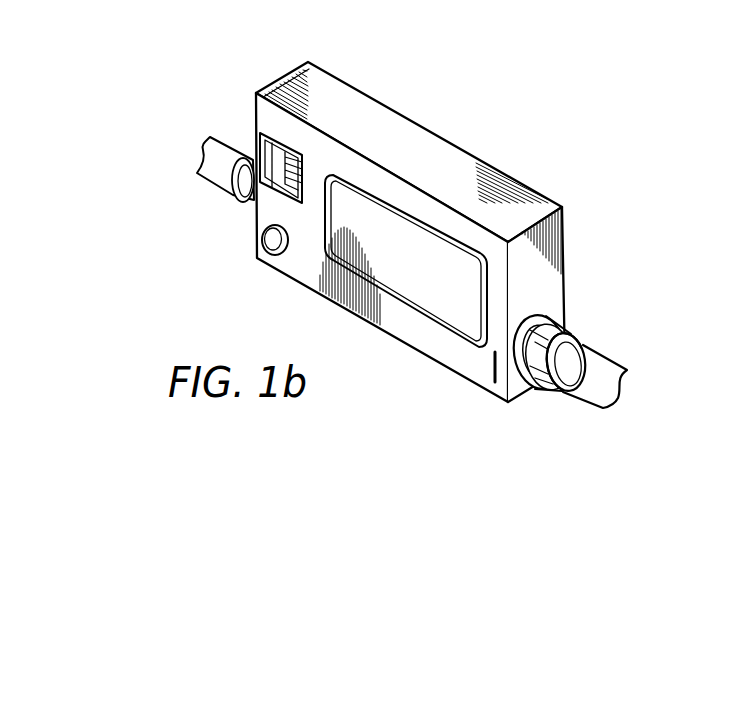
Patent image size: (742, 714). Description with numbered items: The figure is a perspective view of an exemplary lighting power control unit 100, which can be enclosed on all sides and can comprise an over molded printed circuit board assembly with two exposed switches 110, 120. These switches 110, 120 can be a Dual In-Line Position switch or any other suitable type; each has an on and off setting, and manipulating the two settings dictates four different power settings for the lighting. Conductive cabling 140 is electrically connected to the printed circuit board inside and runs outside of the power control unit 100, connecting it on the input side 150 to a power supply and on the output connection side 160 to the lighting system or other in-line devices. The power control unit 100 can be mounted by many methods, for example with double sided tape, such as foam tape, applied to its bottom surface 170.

The lighting power control unit 100 is at (399, 249).
The switch 110 is at (291, 167).
The switch 120 is at (290, 158).
The conductive cabling 140 is at (591, 390).
The input side 150 is at (484, 368).
The output connection side 160 is at (272, 243).
The bottom surface 170 is at (356, 88).